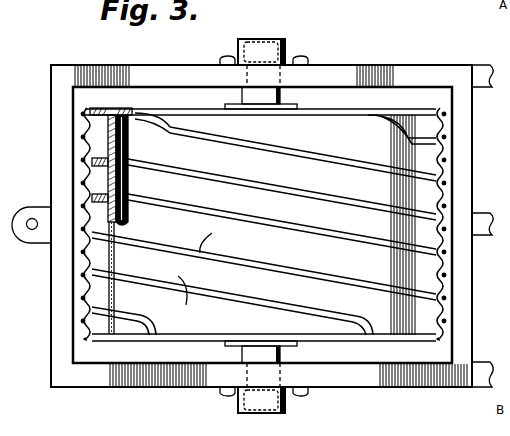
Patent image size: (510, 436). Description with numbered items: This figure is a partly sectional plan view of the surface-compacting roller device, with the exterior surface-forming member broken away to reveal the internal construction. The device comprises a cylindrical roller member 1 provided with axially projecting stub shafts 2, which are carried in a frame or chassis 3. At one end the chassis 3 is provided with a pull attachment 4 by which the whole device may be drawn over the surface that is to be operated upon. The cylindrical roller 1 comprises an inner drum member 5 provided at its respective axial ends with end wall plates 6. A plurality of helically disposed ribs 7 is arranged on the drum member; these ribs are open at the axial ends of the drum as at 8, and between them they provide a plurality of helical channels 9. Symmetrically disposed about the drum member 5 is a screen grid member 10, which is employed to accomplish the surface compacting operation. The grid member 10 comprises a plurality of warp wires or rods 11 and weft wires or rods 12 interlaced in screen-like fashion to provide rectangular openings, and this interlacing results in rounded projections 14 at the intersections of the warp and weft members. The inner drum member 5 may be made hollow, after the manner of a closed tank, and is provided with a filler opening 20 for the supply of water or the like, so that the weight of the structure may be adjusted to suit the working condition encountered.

The cylindrical roller member 1 is at (440, 241).
The stub shafts 2 is at (287, 52).
The frame or chassis 3 is at (400, 70).
The pull attachment 4 is at (39, 212).
The inner drum member 5 is at (264, 221).
The end wall plates 6 is at (123, 108).
The helically disposed ribs 7 is at (336, 192).
The open axial ends of ribs 8 is at (147, 110).
The helical channels 9 is at (200, 267).
The screen grid member 10 is at (50, 285).
The warp wires or rods 11 is at (90, 151).
The weft wires or rods 12 is at (83, 130).
The rounded projections 14 is at (85, 267).
The filler opening 20 is at (322, 347).